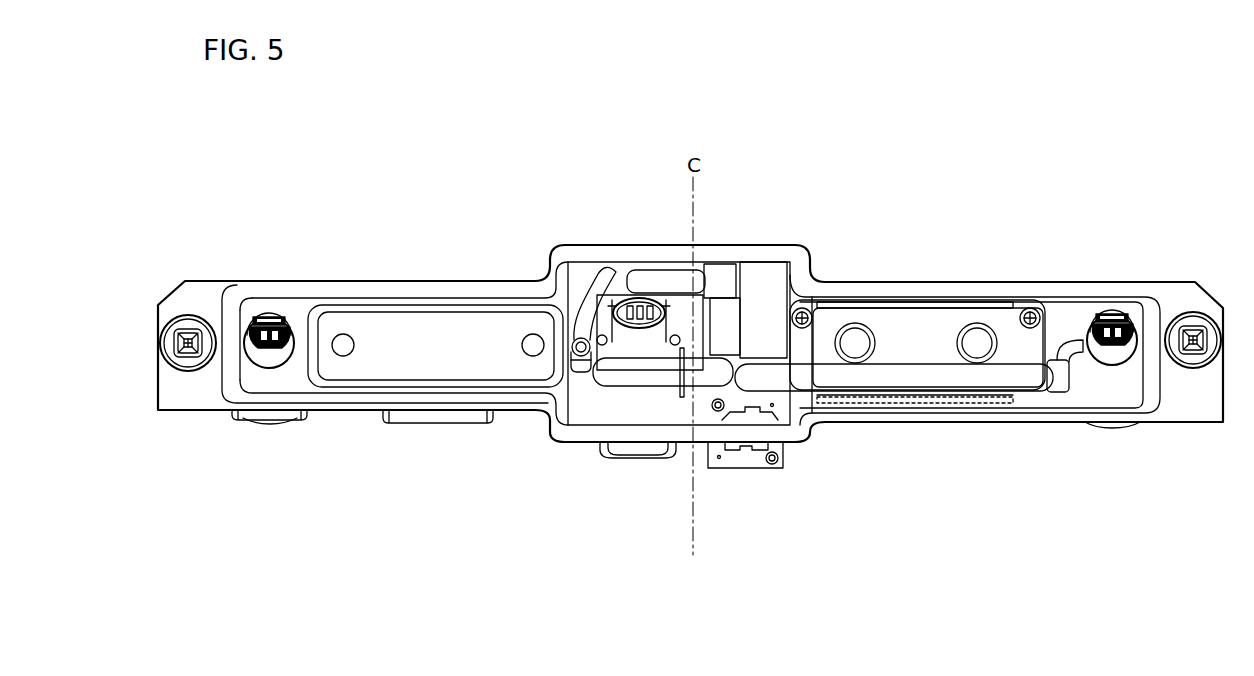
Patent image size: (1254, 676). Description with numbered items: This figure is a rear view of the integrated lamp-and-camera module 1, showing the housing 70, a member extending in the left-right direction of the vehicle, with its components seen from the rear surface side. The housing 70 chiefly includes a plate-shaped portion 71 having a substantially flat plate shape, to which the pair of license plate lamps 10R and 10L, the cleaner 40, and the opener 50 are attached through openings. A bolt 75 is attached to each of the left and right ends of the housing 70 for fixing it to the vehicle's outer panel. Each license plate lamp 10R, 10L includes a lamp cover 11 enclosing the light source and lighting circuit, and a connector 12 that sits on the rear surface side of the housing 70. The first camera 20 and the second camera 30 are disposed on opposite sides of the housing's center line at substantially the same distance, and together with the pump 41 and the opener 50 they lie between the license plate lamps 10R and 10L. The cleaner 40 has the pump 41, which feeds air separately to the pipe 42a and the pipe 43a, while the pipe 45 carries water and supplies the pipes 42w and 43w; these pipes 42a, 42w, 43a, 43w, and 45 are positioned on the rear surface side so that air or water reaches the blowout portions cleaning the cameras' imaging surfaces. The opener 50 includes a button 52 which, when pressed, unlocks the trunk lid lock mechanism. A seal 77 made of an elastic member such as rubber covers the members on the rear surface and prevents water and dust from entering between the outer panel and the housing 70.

The integrated lamp-and-camera module 1 is at (1129, 151).
The housing 70 is at (1205, 284).
The plate-shaped portion 71 is at (1173, 290).
The seal 77 is at (1023, 288).
The bolt 75 is at (180, 371).
The connector 12 is at (263, 368).
The license plate lamp 10R is at (287, 370).
The license plate lamp 10L is at (1104, 372).
The lamp cover 11 is at (267, 420).
The opener 50 is at (493, 424).
The button 52 is at (415, 416).
The pipe 45 is at (577, 364).
The pipe 42w is at (595, 268).
The pipe 42a is at (673, 270).
The pipe 43w is at (664, 388).
The pipe 43a is at (913, 392).
The cleaner 40 is at (917, 303).
The pump 41 is at (945, 323).
The first camera 20 is at (611, 462).
The second camera 30 is at (769, 472).